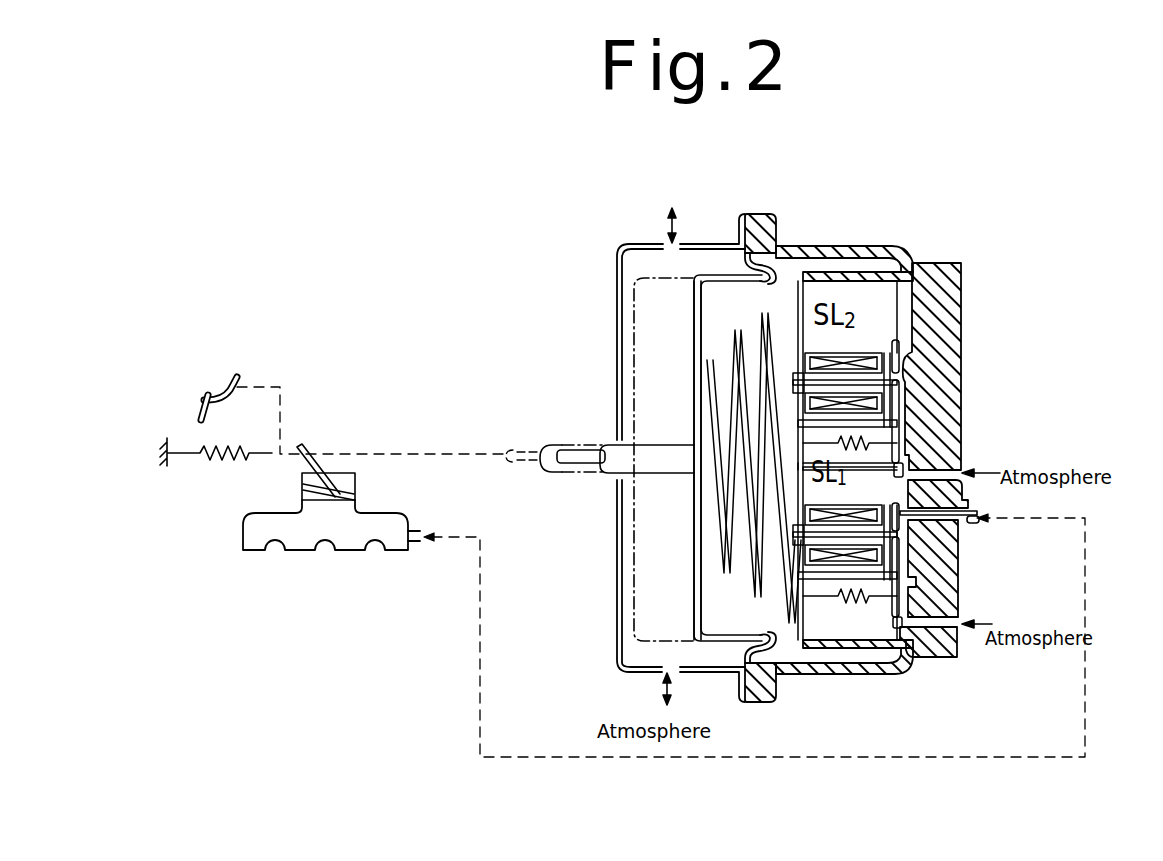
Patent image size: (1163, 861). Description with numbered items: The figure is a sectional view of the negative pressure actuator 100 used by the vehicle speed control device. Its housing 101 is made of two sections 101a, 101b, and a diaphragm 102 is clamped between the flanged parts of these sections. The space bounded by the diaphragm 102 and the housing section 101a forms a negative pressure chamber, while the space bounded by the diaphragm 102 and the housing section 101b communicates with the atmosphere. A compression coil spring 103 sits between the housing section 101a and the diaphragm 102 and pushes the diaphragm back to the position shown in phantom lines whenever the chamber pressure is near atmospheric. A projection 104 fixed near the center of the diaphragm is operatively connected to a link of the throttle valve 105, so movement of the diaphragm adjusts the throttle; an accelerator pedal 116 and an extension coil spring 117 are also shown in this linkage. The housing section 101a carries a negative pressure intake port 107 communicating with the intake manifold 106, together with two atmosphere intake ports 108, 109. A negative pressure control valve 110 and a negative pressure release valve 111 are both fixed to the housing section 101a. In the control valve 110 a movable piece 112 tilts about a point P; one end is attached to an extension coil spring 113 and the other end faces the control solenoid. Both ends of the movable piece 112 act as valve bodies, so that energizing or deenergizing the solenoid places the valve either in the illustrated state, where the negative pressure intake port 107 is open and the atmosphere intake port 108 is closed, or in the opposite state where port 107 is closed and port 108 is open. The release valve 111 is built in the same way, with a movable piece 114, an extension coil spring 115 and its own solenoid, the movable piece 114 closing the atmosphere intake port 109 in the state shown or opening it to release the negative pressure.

The negative pressure actuator 100 is at (1046, 374).
The housing 101 is at (838, 157).
The housing section 101a is at (828, 246).
The housing section 101b is at (712, 243).
The diaphragm 102 is at (690, 544).
The compression coil spring 103 is at (738, 330).
The projection 104 is at (614, 458).
The throttle valve 105 is at (305, 497).
The intake manifold 106 is at (352, 549).
The negative pressure intake port 107 is at (971, 522).
The atmosphere intake port 108 is at (960, 640).
The atmosphere intake port 109 is at (952, 468).
The negative pressure control valve 110 is at (870, 630).
The negative pressure release valve 111 is at (897, 311).
The movable piece 112 is at (912, 568).
The extension coil spring 113 is at (847, 603).
The movable piece 114 is at (900, 405).
The extension coil spring 115 is at (860, 450).
The accelerator pedal 116 is at (228, 392).
The extension coil spring 117 is at (212, 461).
The tilting point P is at (956, 604).